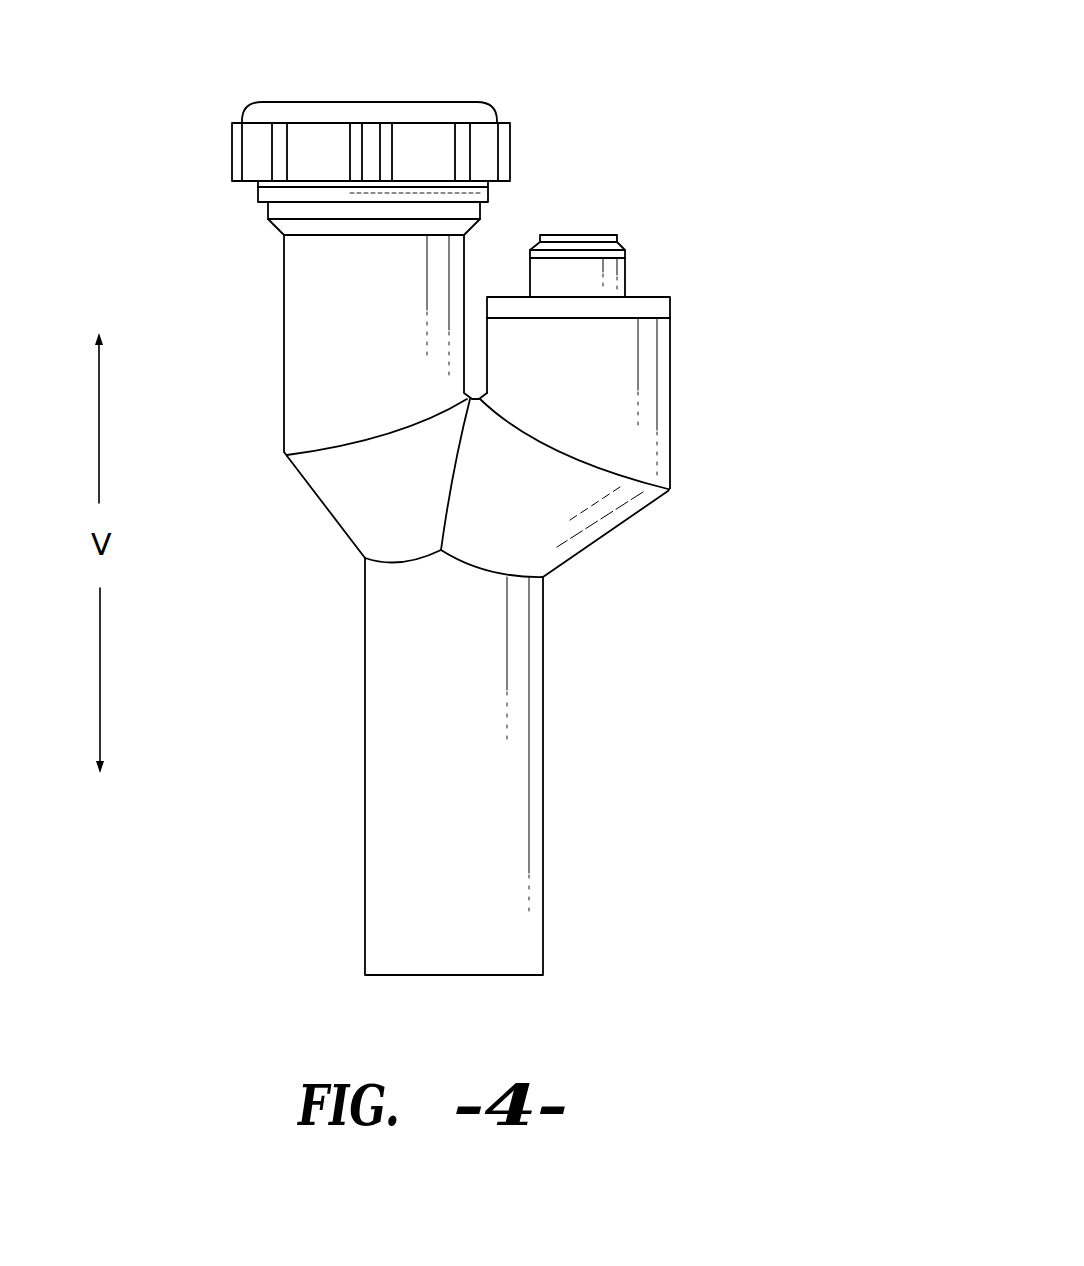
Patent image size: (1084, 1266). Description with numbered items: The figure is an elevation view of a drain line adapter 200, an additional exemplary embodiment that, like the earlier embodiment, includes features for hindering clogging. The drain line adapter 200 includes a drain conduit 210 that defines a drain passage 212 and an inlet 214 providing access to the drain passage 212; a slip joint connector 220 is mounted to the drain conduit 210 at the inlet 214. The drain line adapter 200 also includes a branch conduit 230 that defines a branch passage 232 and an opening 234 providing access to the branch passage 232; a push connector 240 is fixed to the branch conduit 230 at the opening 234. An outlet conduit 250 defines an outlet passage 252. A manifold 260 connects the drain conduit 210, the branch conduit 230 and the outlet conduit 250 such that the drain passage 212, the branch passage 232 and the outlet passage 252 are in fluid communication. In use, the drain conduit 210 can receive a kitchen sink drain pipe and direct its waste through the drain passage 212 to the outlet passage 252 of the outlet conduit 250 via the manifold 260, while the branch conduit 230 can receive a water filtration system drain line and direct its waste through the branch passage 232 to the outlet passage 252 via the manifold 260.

The drain line adapter 200 is at (682, 85).
The drain conduit 210 is at (311, 376).
The drain passage 212 is at (362, 335).
The inlet 214 is at (410, 99).
The slip joint connector 220 is at (320, 143).
The branch conduit 230 is at (615, 363).
The branch passage 232 is at (585, 448).
The opening 234 is at (625, 315).
The push connector 240 is at (583, 300).
The outlet conduit 250 is at (508, 837).
The outlet passage 252 is at (473, 740).
The manifold 260 is at (343, 493).